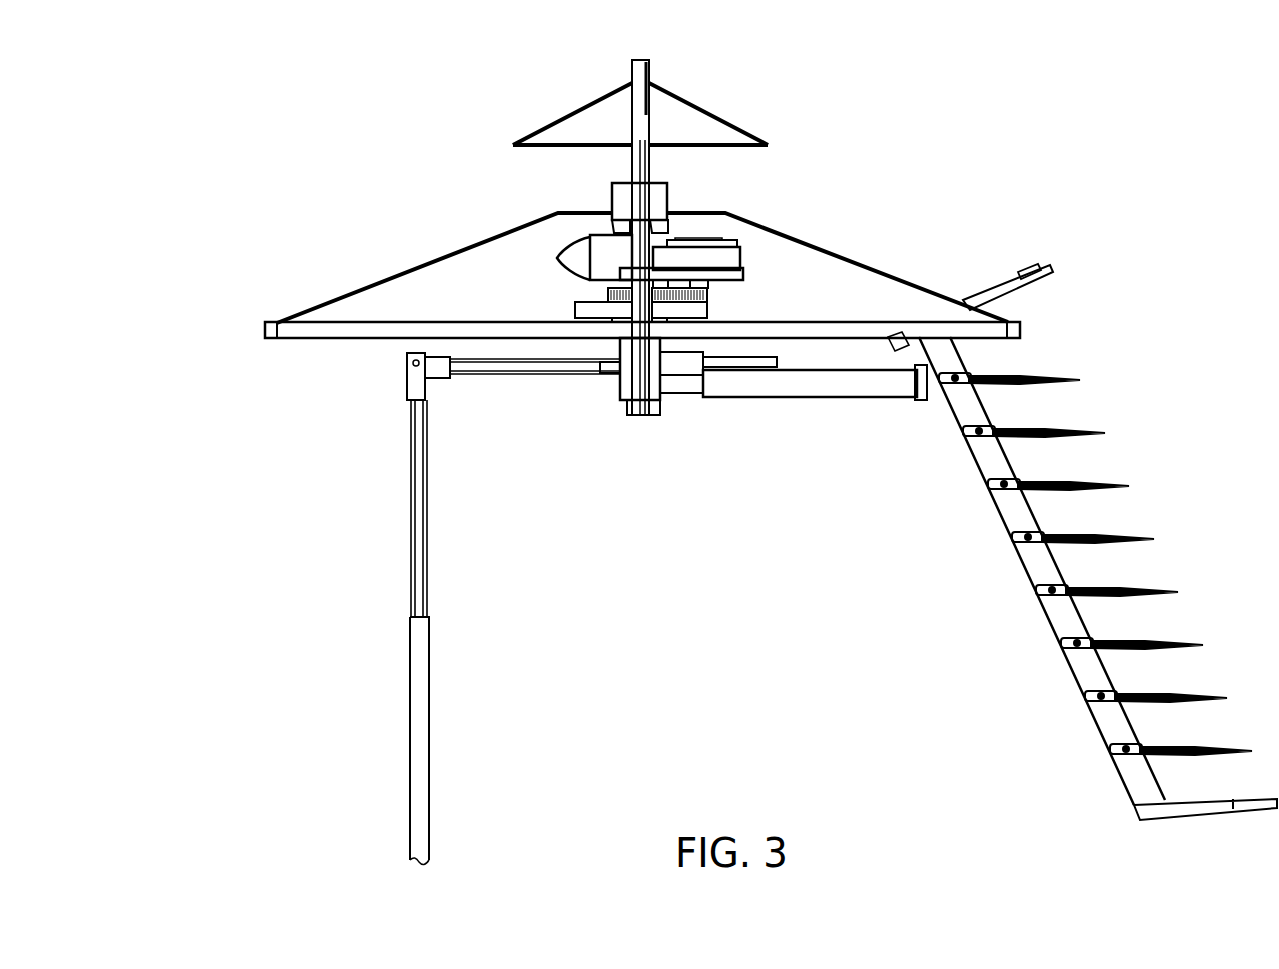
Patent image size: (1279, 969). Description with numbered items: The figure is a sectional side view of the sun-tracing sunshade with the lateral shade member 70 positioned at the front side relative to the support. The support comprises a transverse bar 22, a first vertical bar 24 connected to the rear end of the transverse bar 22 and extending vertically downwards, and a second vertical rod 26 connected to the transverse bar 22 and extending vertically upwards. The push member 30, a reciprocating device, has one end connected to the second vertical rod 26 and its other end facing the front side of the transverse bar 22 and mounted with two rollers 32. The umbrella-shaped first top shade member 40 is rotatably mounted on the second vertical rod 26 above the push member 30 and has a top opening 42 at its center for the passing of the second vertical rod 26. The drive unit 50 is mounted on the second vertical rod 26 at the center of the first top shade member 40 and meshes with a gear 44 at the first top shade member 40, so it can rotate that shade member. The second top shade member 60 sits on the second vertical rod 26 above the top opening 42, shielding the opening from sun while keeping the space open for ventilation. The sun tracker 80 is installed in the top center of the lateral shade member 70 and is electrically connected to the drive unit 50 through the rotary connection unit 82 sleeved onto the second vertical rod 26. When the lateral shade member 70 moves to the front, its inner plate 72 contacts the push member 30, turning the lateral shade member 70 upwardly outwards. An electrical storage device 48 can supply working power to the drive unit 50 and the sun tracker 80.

The transverse bar 22 is at (552, 372).
The first vertical bar 24 is at (410, 695).
The second vertical rod 26 is at (643, 417).
The push member 30 is at (836, 400).
The rollers 32 is at (923, 400).
The first top shade member 40 is at (426, 260).
The top opening 42 is at (722, 213).
The gear 44 is at (705, 303).
The electrical storage device 48 is at (612, 195).
The drive unit 50 is at (745, 294).
The second top shade member 60 is at (718, 118).
The lateral shade member 70 is at (1066, 688).
The inner plate 72 is at (940, 385).
The sun tracker 80 is at (1028, 268).
The rotary connection unit 82 is at (607, 355).